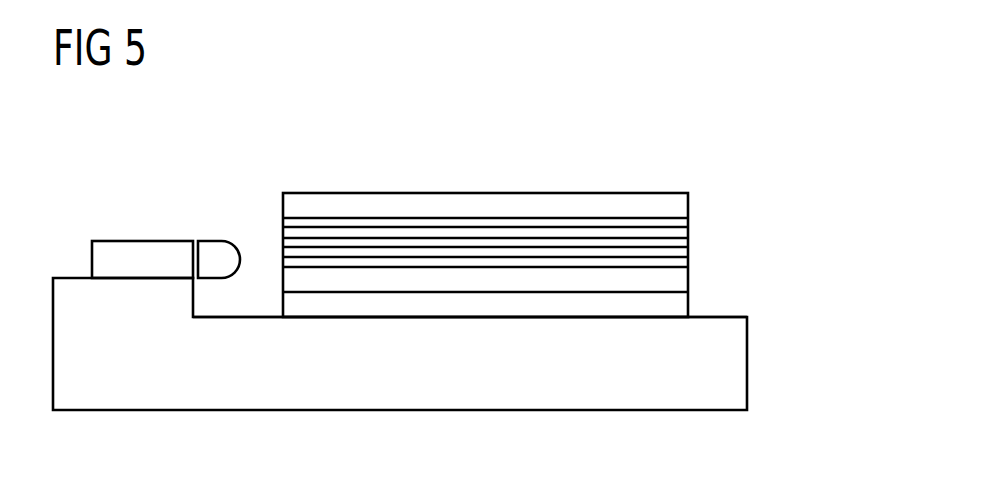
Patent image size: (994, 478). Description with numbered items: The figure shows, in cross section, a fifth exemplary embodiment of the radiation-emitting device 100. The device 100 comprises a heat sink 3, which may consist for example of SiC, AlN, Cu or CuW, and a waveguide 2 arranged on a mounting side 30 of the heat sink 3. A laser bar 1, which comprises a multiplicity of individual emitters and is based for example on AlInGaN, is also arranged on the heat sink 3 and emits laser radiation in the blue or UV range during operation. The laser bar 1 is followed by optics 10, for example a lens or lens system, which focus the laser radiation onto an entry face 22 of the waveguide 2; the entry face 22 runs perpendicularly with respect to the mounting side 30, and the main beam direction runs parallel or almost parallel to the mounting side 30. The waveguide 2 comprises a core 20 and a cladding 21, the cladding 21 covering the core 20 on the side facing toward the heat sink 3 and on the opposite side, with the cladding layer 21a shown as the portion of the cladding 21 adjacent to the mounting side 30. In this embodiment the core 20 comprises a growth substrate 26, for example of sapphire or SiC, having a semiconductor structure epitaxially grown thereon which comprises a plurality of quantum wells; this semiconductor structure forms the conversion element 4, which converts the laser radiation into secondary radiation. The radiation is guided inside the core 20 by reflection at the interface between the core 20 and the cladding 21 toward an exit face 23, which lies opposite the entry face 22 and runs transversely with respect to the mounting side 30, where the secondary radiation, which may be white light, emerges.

The radiation-emitting device 100 is at (727, 125).
The laser bar 1 is at (135, 248).
The optics 10 is at (212, 240).
The waveguide 2 is at (662, 191).
The core 20 is at (463, 225).
The conversion element 4 is at (463, 225).
The cladding 21 is at (358, 200).
The semiconductor layer portion 21a is at (353, 308).
The entry face 22 is at (282, 221).
The exit face 23 is at (690, 251).
The growth substrate 26 is at (578, 282).
The heat sink 3 is at (737, 364).
The mounting side 30 is at (706, 308).